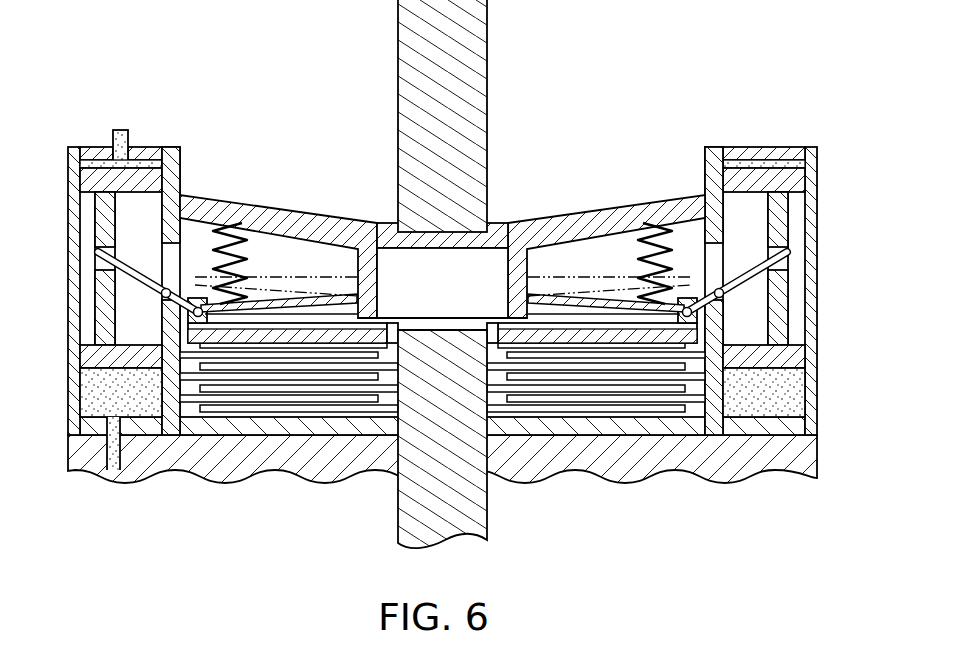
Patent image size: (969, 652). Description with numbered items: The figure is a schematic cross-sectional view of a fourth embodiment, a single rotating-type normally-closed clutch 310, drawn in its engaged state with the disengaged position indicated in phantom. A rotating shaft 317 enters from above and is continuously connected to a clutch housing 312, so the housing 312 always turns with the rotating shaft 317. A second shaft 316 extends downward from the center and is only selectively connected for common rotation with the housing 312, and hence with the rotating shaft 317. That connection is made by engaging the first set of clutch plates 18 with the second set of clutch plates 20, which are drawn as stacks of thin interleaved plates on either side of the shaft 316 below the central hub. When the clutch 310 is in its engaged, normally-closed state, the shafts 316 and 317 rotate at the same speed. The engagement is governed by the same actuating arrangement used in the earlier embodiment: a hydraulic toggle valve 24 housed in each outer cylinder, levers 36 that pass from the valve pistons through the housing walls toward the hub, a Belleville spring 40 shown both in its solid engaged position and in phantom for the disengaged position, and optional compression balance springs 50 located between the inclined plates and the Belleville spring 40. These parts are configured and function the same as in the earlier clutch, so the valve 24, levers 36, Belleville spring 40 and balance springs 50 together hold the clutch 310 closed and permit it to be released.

The single rotating-type normally-closed clutch 310 is at (752, 90).
The clutch housing 312 is at (817, 283).
The shaft 316 is at (487, 503).
The rotating shaft 317 is at (487, 97).
The first set of clutch plates 18 is at (322, 410).
The second set of clutch plates 20 is at (230, 405).
The hydraulic toggle valve 24 is at (80, 307).
The levers 36 is at (135, 268).
The Belleville spring 40 is at (275, 298).
The compression balance springs 50 is at (243, 304).